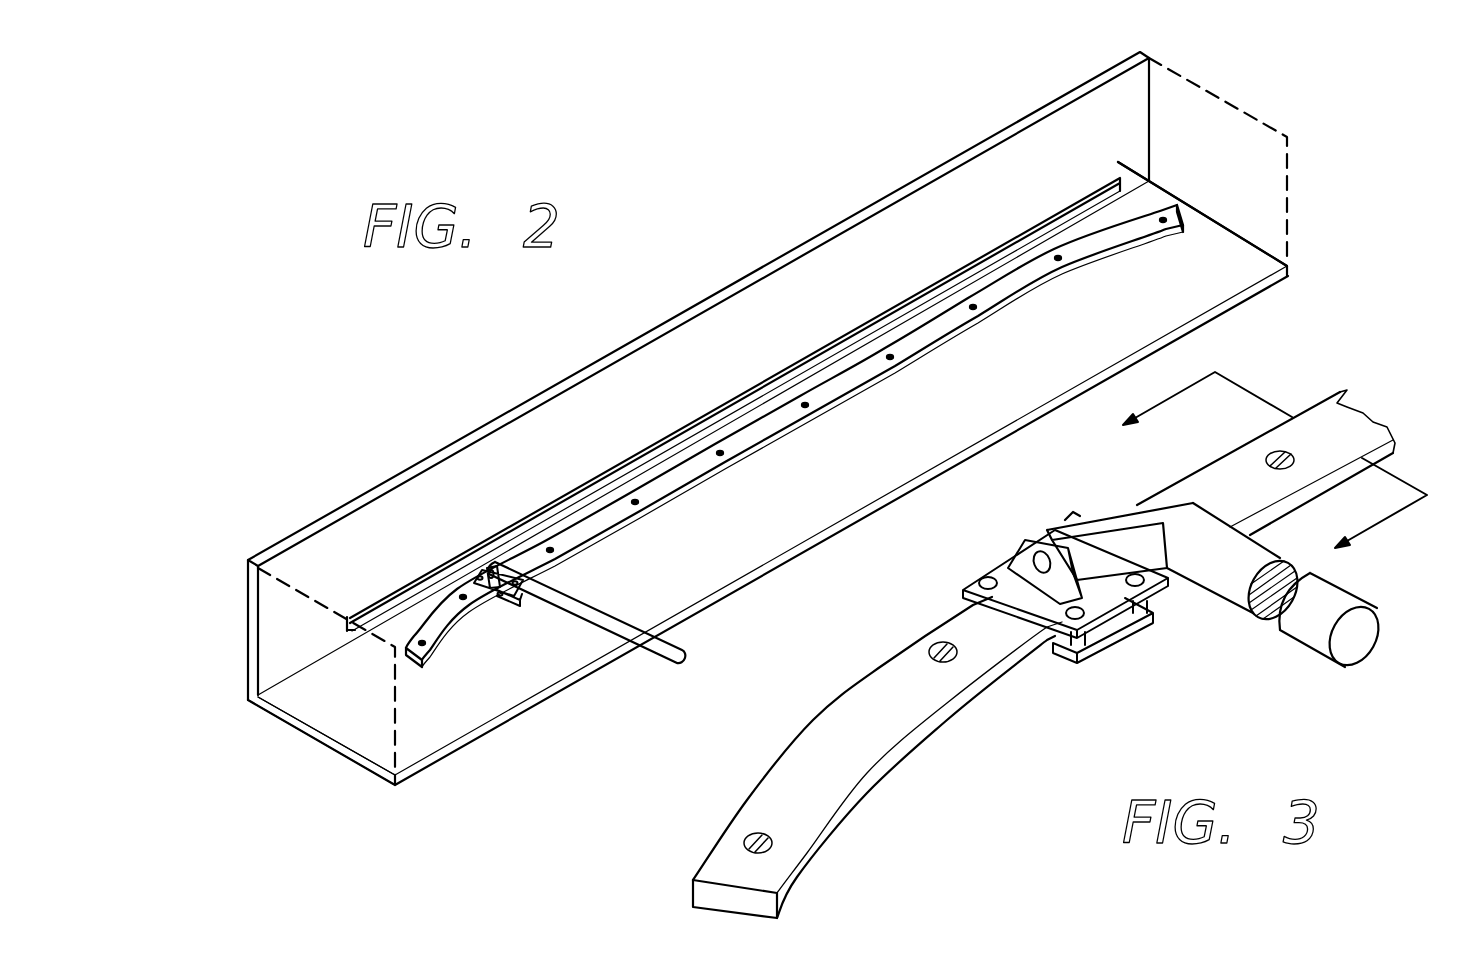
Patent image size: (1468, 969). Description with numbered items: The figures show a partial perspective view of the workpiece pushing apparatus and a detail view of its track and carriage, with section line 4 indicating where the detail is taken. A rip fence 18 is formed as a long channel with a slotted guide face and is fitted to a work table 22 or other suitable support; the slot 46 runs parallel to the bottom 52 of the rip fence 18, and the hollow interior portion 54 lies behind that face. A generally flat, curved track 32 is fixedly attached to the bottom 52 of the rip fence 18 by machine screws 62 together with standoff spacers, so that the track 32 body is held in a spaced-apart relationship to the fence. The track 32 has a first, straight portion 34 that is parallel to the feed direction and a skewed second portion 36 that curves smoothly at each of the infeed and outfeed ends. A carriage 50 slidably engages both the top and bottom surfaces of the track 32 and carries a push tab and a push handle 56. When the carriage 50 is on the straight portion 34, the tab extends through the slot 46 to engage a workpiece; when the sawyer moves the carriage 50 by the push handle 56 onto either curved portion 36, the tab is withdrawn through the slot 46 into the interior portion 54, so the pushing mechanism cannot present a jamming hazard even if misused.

In FIG. 2, the rip fence 18 is at (780, 422).
In FIG. 2, the channel track 22 is at (417, 464).
In FIG. 2, the track 32 is at (1032, 278).
In FIG. 3, the track 32 is at (779, 757).
In FIG. 2, the first portion 34 is at (850, 382).
In FIG. 3, the first portion 34 is at (1348, 428).
In FIG. 2, the second portion 36 is at (1160, 235).
In FIG. 3, the second portion 36 is at (752, 808).
In FIG. 2, the slot 46 is at (893, 318).
In FIG. 2, the carriage 50 is at (515, 588).
In FIG. 3, the carriage 50 is at (1012, 578).
In FIG. 2, the bottom 52 is at (320, 690).
In FIG. 2, the interior portion 54 is at (1153, 179).
In FIG. 2, the push handle 56 is at (683, 642).
In FIG. 3, the push handle 56 is at (1303, 613).
In FIG. 3, the machine screws 62 is at (772, 848).
In FIG. 3, the section line 4- 4 is at (1275, 461).